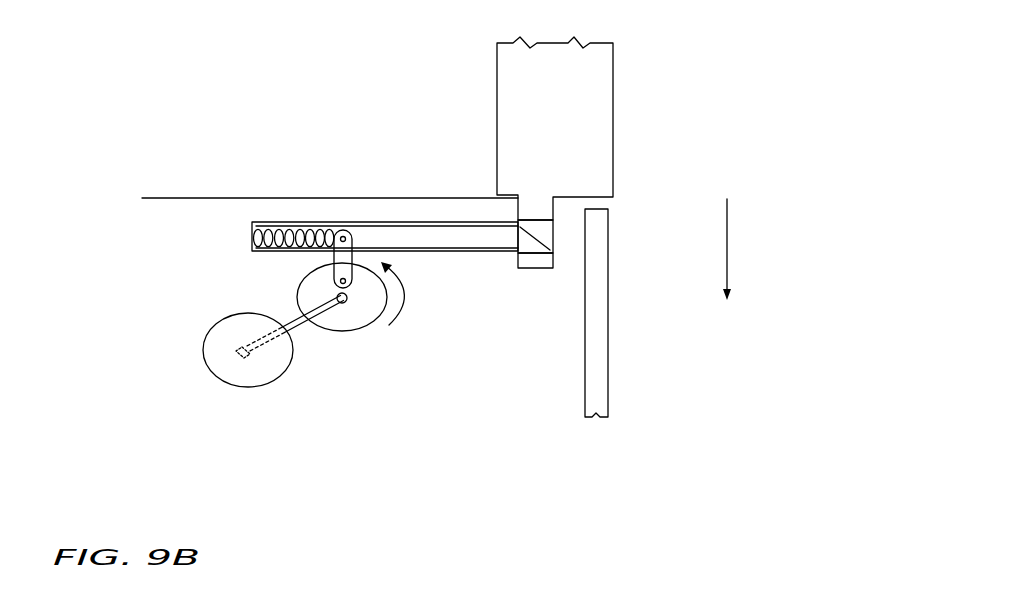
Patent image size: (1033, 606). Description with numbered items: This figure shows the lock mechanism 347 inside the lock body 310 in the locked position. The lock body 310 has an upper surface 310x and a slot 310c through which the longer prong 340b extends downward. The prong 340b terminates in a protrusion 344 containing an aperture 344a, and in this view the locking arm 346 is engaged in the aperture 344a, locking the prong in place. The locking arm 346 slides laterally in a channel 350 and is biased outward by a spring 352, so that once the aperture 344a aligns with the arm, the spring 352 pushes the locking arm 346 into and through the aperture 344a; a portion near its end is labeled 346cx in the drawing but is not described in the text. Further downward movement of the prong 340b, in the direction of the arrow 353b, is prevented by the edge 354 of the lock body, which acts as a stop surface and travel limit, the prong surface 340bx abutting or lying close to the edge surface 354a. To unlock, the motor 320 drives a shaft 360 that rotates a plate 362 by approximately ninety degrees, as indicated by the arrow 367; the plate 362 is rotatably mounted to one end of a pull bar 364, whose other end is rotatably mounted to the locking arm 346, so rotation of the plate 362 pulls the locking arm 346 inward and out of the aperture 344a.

The lock body 310 is at (502, 424).
The upper surface 310x is at (177, 198).
The slot 310c is at (580, 203).
The motor 320 is at (270, 382).
The longer prong 340b is at (578, 127).
The surface of prong 340bx is at (612, 197).
The protrusion 344 is at (509, 262).
The aperture 344a is at (535, 224).
The locking arm 346 is at (428, 232).
The end portion of slide member 346cx is at (540, 238).
The lock mechanism 347 is at (363, 357).
The channel 350 is at (347, 229).
The spring 352 is at (252, 237).
The arrow 353b is at (733, 221).
The edge of lock body 354 is at (614, 327).
The edge surface 354a is at (596, 209).
The shaft 360 is at (291, 331).
The plate 362 is at (367, 331).
The pull bar 364 is at (334, 256).
The arrow 367 is at (403, 298).